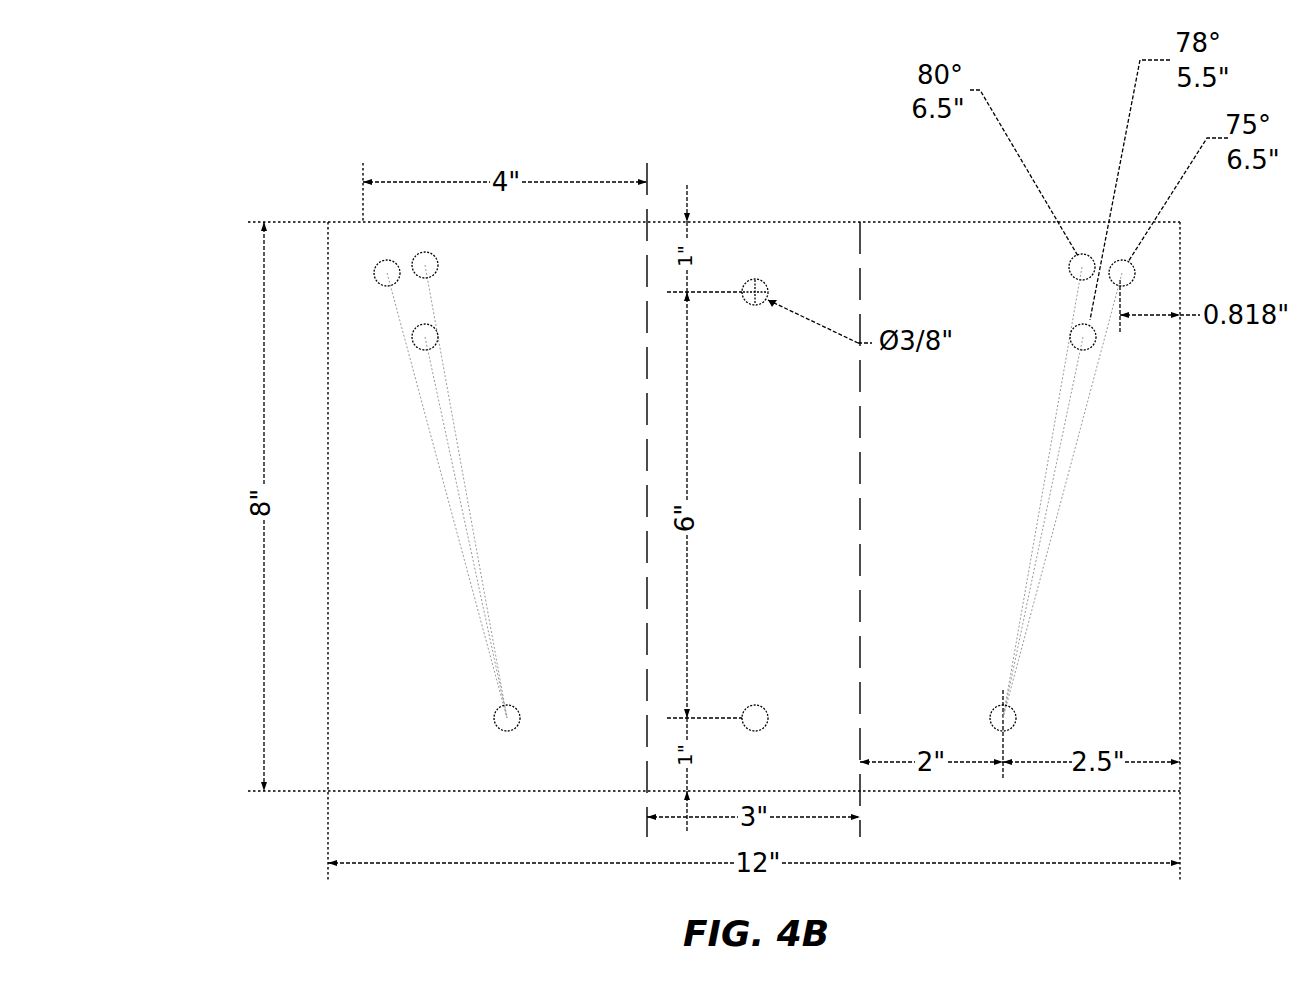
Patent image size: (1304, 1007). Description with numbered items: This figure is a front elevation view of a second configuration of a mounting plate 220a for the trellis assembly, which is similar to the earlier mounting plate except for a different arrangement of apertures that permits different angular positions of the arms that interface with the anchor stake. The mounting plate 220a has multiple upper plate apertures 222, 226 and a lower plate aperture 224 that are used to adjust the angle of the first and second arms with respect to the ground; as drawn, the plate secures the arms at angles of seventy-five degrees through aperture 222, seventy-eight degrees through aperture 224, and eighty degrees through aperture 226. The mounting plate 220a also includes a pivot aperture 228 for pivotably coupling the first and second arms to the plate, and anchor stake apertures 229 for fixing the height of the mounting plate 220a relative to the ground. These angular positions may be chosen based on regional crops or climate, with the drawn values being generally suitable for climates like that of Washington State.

The mounting plate 220a is at (1180, 658).
The upper plate aperture 222 is at (374, 271).
The lower plate aperture 224 is at (412, 334).
The upper plate aperture 226 is at (418, 256).
The pivot aperture 228 is at (503, 731).
The anchor stake apertures 229 is at (762, 278).